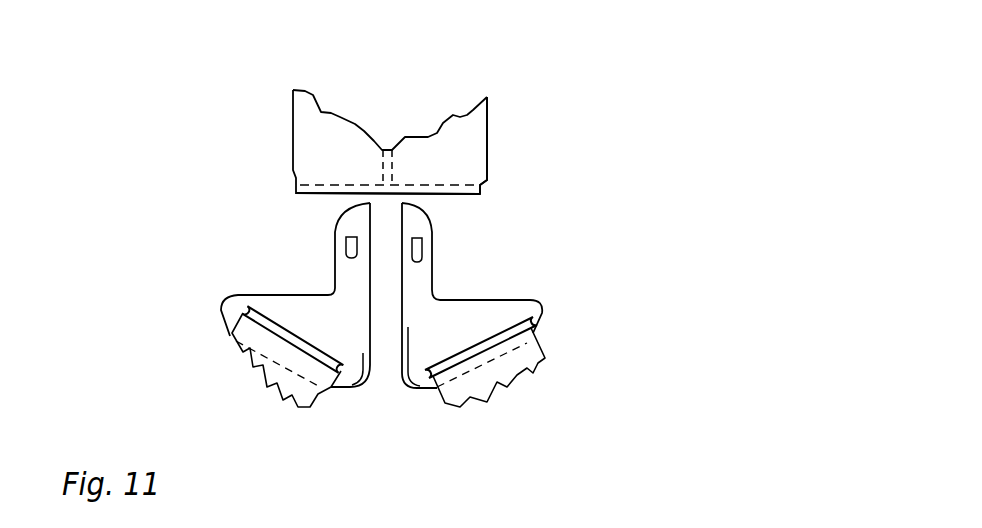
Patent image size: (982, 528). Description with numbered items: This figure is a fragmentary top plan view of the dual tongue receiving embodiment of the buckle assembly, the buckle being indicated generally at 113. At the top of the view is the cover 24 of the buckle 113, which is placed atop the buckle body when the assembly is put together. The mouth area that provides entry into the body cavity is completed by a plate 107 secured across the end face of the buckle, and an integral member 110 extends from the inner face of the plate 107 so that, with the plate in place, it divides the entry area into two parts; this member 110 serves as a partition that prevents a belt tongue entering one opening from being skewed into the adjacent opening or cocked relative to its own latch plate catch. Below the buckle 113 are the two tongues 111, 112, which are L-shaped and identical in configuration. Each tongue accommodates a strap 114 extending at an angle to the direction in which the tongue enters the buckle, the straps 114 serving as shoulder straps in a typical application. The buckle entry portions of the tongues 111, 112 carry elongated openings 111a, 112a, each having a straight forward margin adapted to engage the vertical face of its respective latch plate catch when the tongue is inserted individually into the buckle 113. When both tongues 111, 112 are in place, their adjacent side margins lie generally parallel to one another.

The cover 24 is at (317, 143).
The plate 107 is at (346, 195).
The integral member 110 is at (393, 167).
The buckle 113 is at (497, 162).
The tongue 111 is at (353, 353).
The elongated opening 111a is at (346, 243).
The tongue 112 is at (412, 378).
The elongated opening 112a is at (421, 247).
The straps 114 is at (302, 407).